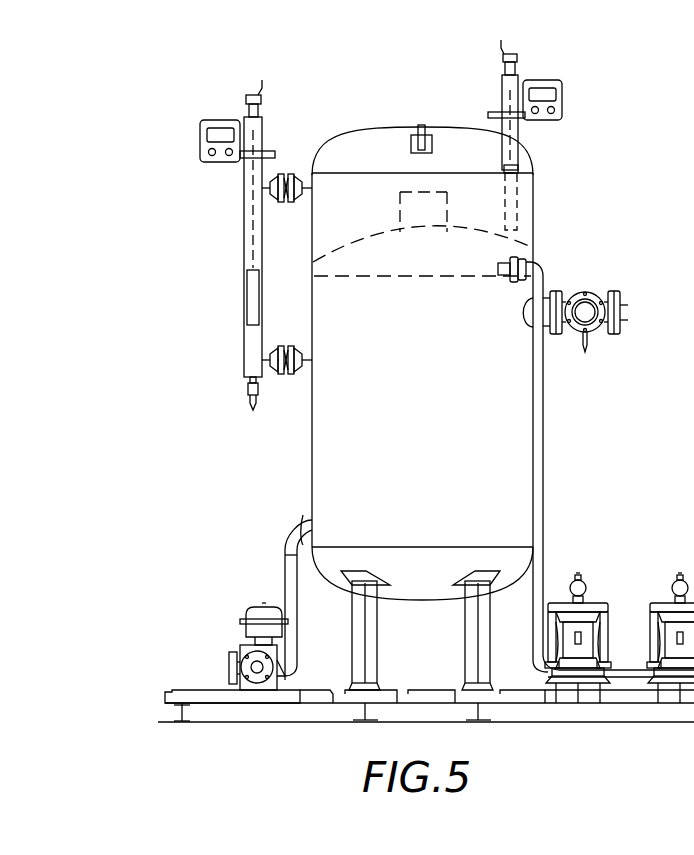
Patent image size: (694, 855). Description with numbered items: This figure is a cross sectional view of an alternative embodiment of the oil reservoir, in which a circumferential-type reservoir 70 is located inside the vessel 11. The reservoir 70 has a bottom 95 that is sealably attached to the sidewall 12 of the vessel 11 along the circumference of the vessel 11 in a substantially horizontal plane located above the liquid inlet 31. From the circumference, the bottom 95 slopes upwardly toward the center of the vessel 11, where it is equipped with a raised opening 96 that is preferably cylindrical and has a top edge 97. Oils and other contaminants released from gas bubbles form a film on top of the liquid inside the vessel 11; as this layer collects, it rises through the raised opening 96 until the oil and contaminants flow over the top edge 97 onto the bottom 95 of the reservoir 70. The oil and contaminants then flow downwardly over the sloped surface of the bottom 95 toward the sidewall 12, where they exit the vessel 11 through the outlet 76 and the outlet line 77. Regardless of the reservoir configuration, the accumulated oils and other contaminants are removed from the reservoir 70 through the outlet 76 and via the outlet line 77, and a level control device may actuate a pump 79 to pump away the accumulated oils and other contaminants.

The vessel 11 is at (425, 403).
The sidewall 12 is at (538, 185).
The liquid inlet 31 is at (526, 329).
The reservoir 70 is at (516, 236).
The outlet 76 is at (502, 274).
The outlet line 77 is at (545, 400).
The pump 79 is at (660, 684).
The bottom 95 is at (474, 232).
The raised opening 96 is at (400, 204).
The top edge 97 is at (438, 192).